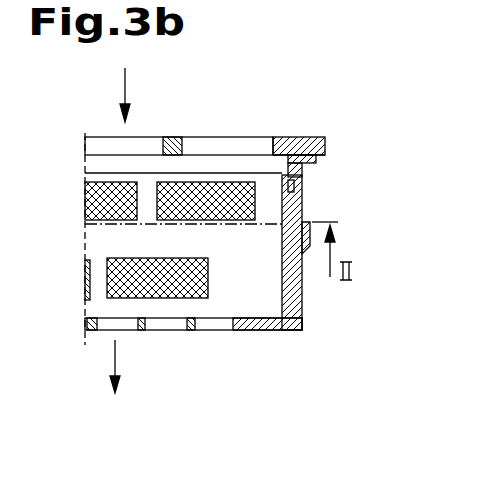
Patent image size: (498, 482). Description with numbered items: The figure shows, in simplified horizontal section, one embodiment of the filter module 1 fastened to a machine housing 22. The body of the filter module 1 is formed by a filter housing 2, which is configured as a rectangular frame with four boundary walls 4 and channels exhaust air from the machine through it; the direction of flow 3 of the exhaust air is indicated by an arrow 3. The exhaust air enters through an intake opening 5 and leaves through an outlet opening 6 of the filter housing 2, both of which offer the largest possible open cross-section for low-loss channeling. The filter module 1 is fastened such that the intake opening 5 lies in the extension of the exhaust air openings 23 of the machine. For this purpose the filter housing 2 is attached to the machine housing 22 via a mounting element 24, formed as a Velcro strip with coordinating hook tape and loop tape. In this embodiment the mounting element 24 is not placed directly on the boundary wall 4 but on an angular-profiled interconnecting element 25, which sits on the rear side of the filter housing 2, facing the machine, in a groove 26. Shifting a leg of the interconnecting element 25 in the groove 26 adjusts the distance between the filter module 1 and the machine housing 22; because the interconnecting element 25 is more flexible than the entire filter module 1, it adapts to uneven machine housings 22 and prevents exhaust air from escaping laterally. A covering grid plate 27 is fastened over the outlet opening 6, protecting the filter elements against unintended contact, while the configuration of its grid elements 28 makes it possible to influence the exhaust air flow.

The filter module 1 is at (356, 249).
The filter housing 2 is at (290, 286).
The direction of flow 3 is at (113, 360).
The boundary wall 4 is at (302, 212).
The intake opening 5 is at (110, 158).
The outlet opening 6 is at (211, 355).
The machine housing 22 is at (288, 135).
The exhaust air openings 23 is at (235, 145).
The mounting element 24 is at (308, 153).
The interconnecting element 25 is at (316, 158).
The groove 26 is at (294, 188).
The covering grid plate 27 is at (283, 330).
The grid elements 28 is at (187, 331).